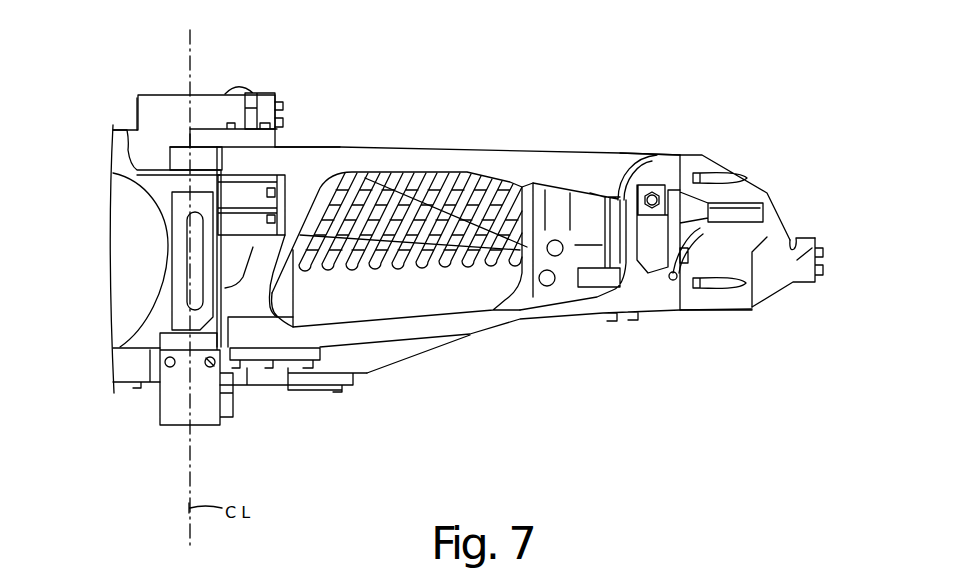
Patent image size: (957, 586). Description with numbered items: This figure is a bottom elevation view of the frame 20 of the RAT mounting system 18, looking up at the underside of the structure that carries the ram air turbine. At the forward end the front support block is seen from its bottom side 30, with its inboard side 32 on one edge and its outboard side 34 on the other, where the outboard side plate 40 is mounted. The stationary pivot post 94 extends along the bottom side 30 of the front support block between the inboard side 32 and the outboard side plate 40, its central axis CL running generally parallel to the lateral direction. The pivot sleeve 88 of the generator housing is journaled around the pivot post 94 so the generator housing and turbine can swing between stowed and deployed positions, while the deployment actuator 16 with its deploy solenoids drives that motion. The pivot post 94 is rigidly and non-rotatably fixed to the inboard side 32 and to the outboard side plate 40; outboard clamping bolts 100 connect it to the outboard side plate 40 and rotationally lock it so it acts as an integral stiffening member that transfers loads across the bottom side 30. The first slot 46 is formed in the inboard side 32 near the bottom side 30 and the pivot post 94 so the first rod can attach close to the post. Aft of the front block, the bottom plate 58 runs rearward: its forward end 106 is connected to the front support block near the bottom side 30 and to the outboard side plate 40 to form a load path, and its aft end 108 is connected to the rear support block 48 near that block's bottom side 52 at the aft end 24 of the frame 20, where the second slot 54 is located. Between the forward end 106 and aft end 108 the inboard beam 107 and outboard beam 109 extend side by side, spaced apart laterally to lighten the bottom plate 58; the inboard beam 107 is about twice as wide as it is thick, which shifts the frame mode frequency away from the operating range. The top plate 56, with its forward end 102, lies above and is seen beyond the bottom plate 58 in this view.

The deployment actuator 16 is at (387, 265).
The RAT mounting system 18 is at (684, 110).
The frame 20 is at (337, 146).
The aft end 24 is at (794, 188).
The bottom side 30 is at (267, 137).
The inboard side 32 is at (162, 93).
The outboard side 34 is at (133, 390).
The outboard side plate 40 is at (330, 383).
The first slot 46 is at (252, 108).
The rear support block 48 is at (757, 170).
The bottom side 52 is at (733, 262).
The second slot 54 is at (796, 232).
The top plate 56 is at (388, 368).
The bottom plate 58 is at (538, 163).
The pivot sleeve 88 is at (187, 181).
The pivot post 94 is at (192, 365).
The outboard clamping bolts 100 is at (170, 367).
The forward end 102 is at (294, 290).
The forward end 106 is at (293, 311).
The inboard beam 107 is at (428, 158).
The aft end 108 is at (653, 291).
The outboard beam 109 is at (523, 317).